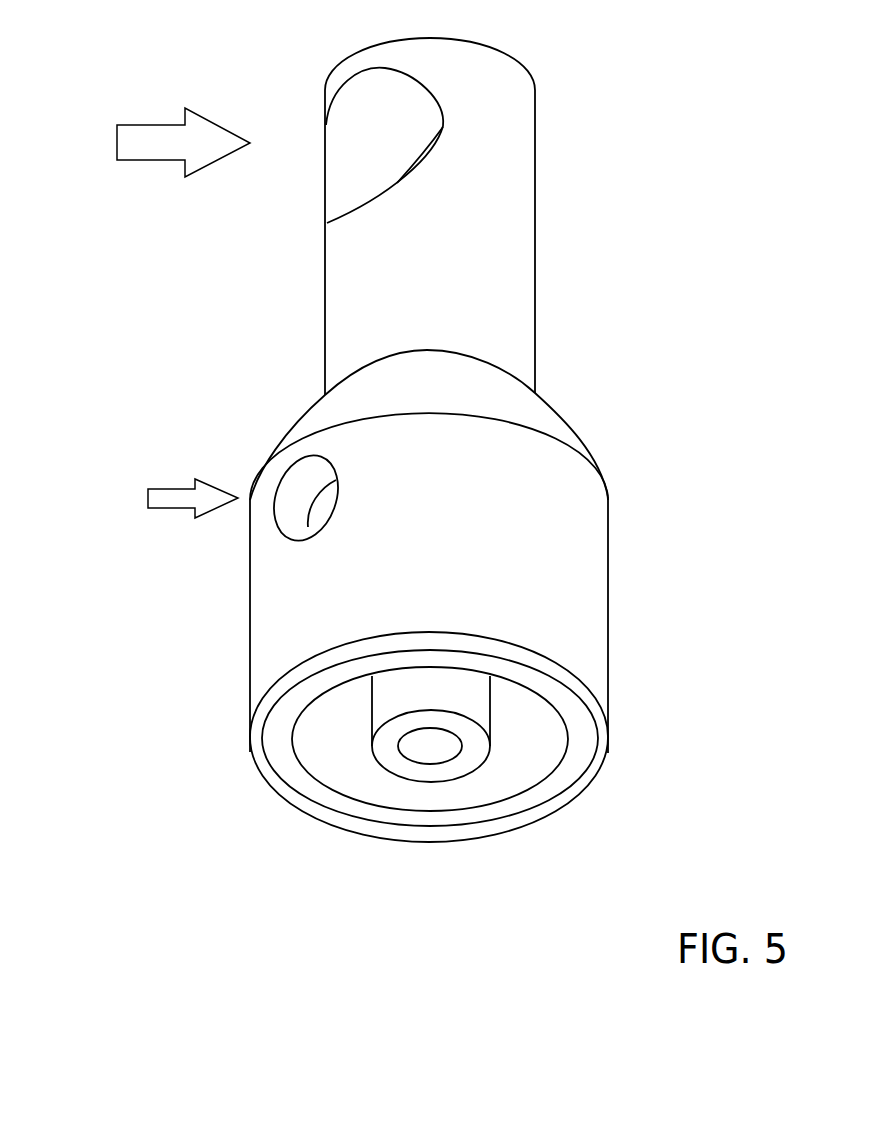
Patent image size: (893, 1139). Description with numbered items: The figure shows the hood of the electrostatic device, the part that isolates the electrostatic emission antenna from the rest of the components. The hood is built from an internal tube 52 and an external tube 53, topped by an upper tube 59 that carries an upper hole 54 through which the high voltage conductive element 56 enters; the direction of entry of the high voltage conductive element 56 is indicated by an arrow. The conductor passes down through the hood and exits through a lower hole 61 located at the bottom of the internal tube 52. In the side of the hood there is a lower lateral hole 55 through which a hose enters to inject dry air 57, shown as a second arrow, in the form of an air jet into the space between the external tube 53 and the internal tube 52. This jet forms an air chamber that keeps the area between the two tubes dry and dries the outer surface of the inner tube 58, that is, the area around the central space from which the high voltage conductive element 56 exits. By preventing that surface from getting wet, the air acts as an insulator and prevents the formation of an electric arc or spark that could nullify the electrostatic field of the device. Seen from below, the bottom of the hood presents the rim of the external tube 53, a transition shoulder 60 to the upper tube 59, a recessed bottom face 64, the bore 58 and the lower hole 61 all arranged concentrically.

The internal tube 52 is at (383, 748).
The external tube 53 is at (580, 752).
The upper hole 54 is at (378, 112).
The lower lateral hole 55 is at (292, 498).
The high voltage conductive element 56 is at (142, 142).
The dry air 57 is at (160, 499).
The outer surface of the inner tube 58 is at (392, 698).
The upper tube 59 is at (512, 234).
The shoulder 60 is at (500, 408).
The lower hole 61 is at (430, 748).
The recessed bottom face 64 is at (503, 785).